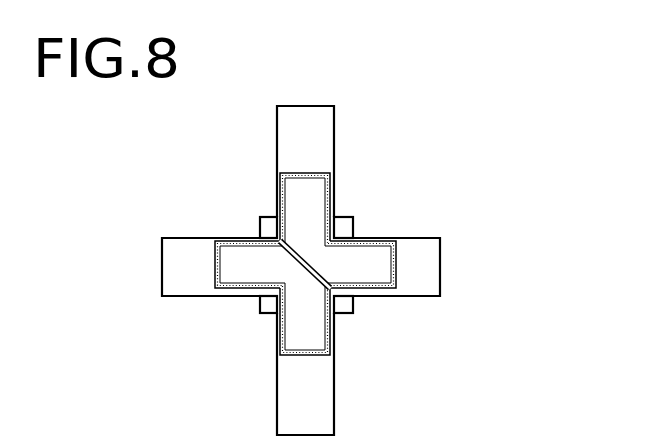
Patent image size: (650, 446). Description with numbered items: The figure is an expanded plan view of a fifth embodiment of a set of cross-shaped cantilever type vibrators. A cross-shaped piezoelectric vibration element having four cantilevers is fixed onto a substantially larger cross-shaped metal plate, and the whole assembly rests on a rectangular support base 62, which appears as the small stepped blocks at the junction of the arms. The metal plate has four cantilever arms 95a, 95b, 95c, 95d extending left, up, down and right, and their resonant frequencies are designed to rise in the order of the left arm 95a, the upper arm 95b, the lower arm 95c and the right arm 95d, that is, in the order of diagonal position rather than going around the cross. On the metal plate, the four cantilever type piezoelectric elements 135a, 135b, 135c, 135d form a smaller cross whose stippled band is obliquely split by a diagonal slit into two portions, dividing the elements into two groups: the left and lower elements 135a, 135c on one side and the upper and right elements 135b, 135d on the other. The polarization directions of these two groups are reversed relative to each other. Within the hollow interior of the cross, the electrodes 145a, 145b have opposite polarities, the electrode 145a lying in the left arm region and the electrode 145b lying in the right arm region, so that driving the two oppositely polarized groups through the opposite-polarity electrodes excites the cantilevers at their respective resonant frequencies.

The rectangular support base 62 is at (262, 226).
The cantilever of the metal plate 95a is at (172, 279).
The cantilever of the metal plate 95b is at (297, 118).
The cantilever of the metal plate 95c is at (320, 410).
The cantilever of the metal plate 95d is at (430, 248).
The cantilever type piezoelectric element 135a is at (215, 252).
The cantilever type piezoelectric element 135b is at (330, 180).
The cantilever type piezoelectric element 135c is at (282, 354).
The cantilever type piezoelectric element 135d is at (390, 290).
The electrode 145a is at (257, 273).
The electrode 145b is at (365, 257).